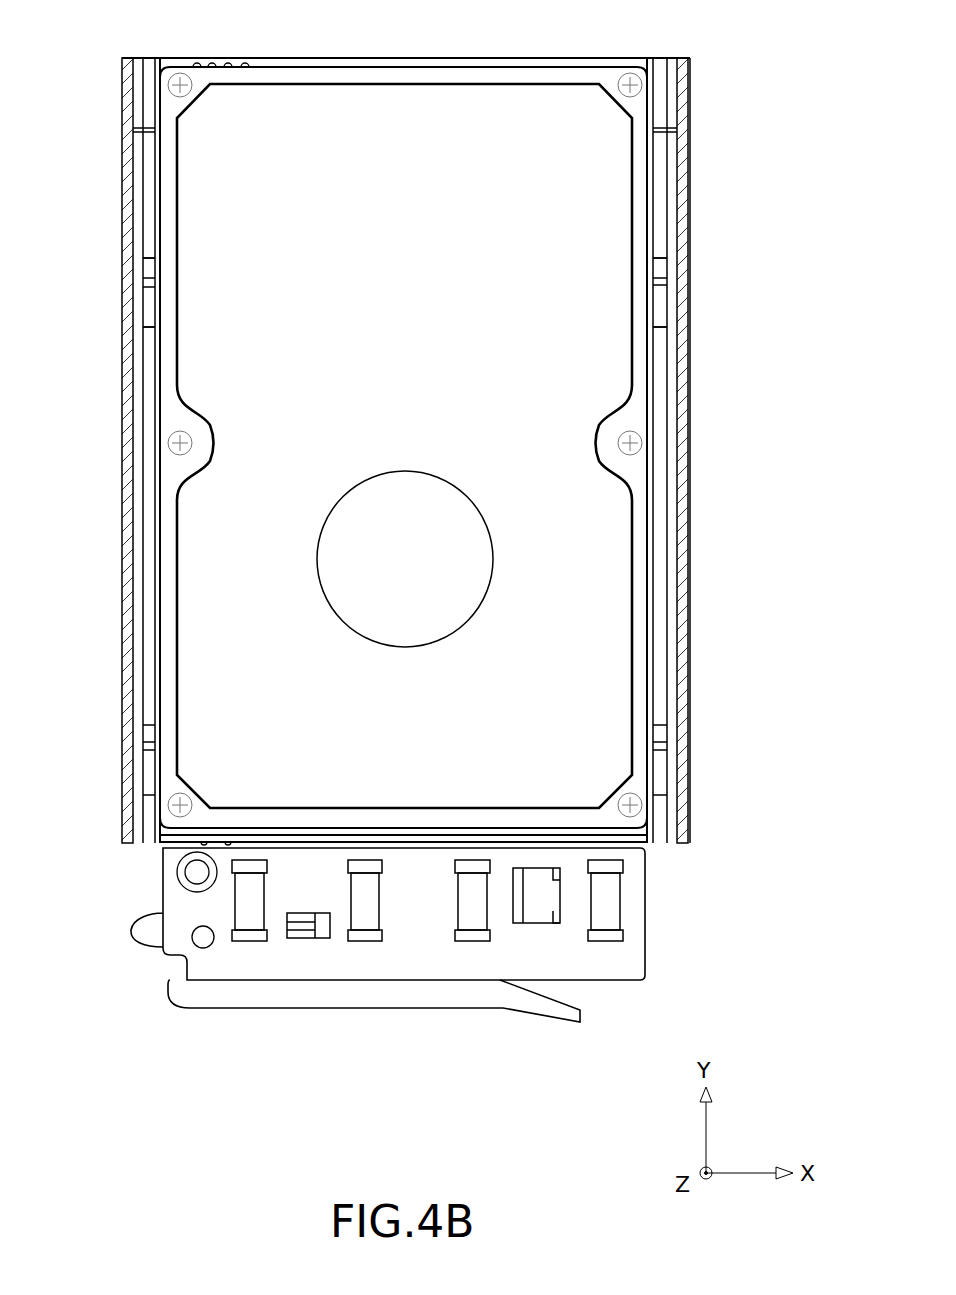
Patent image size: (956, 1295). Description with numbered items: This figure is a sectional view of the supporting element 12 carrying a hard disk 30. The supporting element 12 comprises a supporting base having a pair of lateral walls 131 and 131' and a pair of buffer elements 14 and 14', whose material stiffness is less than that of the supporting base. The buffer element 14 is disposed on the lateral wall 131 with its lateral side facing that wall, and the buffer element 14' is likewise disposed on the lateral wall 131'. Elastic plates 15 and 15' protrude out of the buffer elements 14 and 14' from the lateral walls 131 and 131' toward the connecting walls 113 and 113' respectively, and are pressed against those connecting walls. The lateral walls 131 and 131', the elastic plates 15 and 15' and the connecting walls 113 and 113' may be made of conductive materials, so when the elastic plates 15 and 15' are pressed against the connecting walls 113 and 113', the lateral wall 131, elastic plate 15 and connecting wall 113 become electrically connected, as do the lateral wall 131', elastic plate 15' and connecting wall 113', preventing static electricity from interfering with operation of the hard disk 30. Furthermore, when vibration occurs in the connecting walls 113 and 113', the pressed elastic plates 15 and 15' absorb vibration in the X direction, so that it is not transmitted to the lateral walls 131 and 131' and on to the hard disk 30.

The supporting element 12 is at (417, 1008).
The buffer element 14 is at (699, 561).
The buffer element 14' is at (110, 561).
The elastic plate 15 is at (694, 520).
The elastic plate 15' is at (115, 520).
The hard disk 30 is at (397, 105).
The connecting wall 113 is at (701, 450).
The connecting wall 113' is at (109, 450).
The lateral wall 131 is at (700, 450).
The lateral wall 131' is at (112, 450).